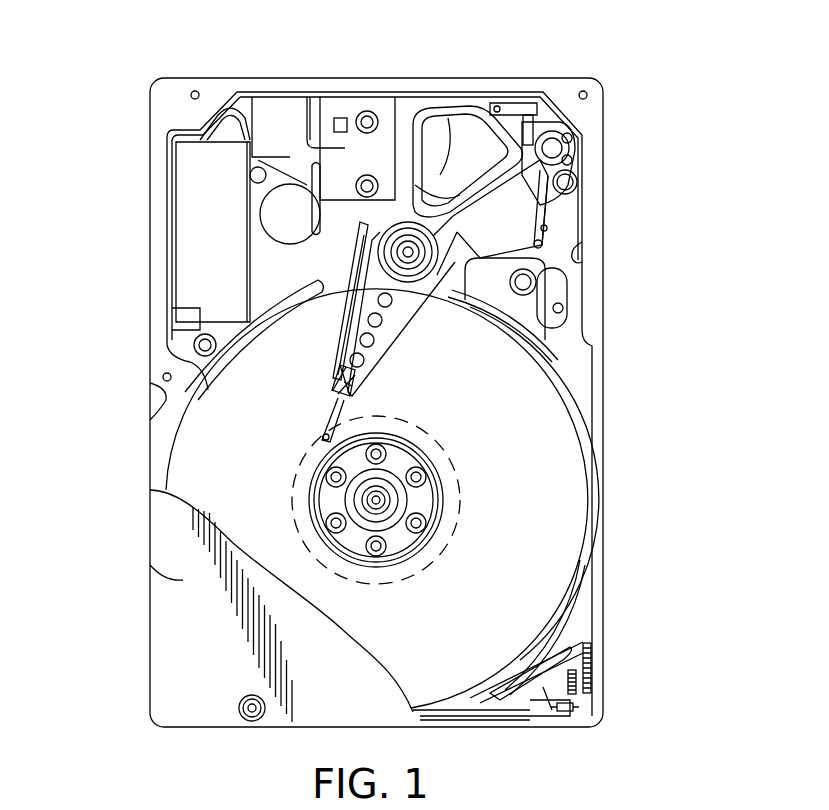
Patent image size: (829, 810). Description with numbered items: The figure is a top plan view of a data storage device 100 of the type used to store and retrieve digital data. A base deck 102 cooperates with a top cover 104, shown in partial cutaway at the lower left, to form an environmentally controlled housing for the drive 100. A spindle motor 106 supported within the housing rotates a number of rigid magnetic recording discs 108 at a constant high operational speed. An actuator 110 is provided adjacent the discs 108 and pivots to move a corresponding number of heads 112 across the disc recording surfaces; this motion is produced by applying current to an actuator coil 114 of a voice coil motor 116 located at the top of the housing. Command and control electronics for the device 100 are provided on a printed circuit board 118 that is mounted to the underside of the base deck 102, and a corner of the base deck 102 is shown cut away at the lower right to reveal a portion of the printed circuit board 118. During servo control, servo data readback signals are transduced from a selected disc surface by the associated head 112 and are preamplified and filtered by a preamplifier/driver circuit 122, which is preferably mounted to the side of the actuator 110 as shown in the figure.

The data storage device 100 is at (213, 50).
The base deck 102 is at (157, 197).
The top cover 104 is at (180, 582).
The spindle motor 106 is at (390, 472).
The rigid magnetic recording disc 108 is at (547, 483).
The actuator 110 is at (376, 368).
The head 112 is at (316, 442).
The actuator coil 114 is at (448, 115).
The voice coil motor 116 is at (472, 104).
The printed circuit board 118 is at (600, 710).
The preamplifier/driver circuit 122 is at (362, 224).